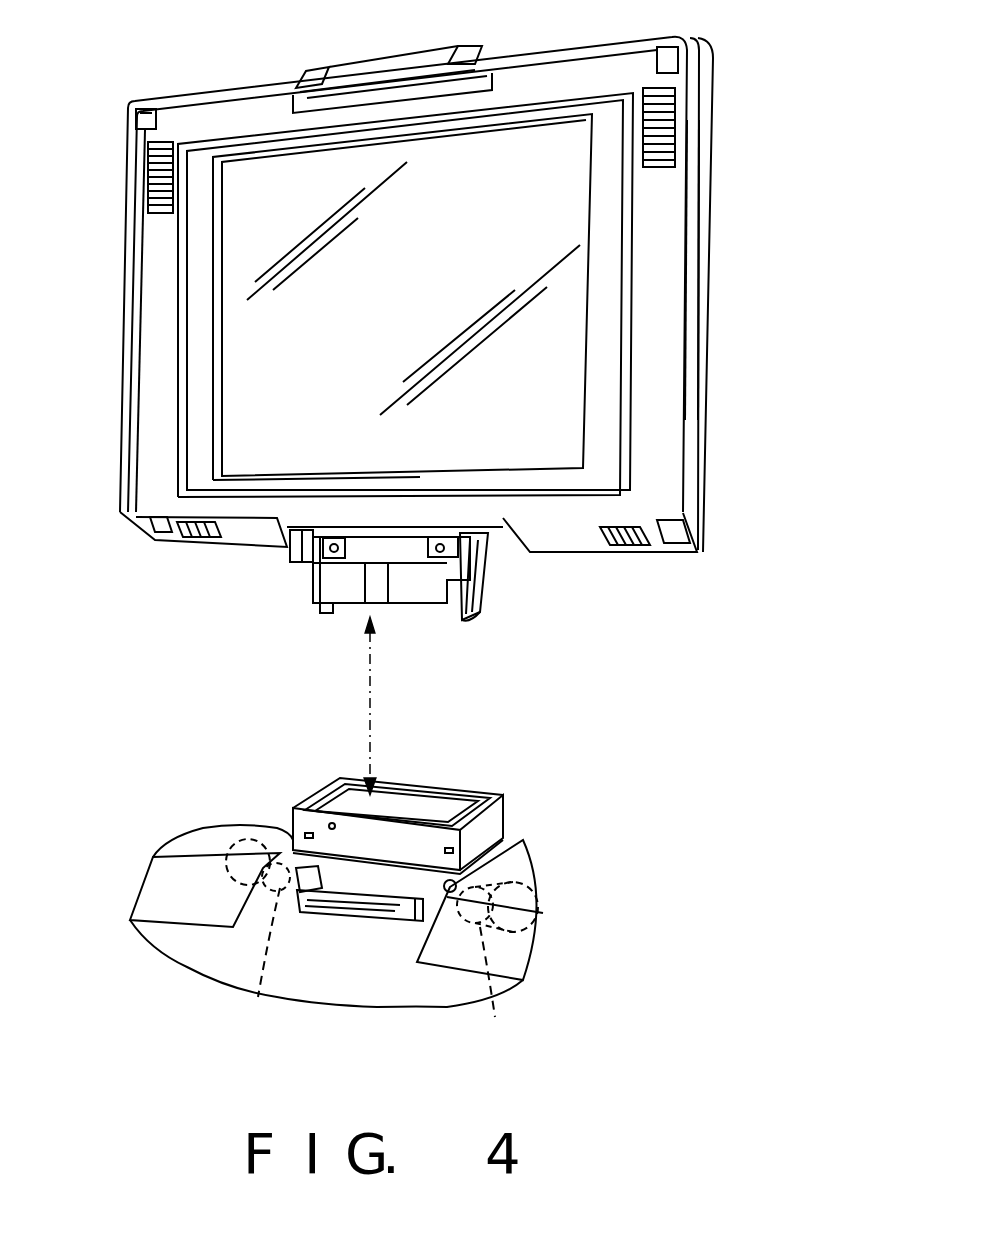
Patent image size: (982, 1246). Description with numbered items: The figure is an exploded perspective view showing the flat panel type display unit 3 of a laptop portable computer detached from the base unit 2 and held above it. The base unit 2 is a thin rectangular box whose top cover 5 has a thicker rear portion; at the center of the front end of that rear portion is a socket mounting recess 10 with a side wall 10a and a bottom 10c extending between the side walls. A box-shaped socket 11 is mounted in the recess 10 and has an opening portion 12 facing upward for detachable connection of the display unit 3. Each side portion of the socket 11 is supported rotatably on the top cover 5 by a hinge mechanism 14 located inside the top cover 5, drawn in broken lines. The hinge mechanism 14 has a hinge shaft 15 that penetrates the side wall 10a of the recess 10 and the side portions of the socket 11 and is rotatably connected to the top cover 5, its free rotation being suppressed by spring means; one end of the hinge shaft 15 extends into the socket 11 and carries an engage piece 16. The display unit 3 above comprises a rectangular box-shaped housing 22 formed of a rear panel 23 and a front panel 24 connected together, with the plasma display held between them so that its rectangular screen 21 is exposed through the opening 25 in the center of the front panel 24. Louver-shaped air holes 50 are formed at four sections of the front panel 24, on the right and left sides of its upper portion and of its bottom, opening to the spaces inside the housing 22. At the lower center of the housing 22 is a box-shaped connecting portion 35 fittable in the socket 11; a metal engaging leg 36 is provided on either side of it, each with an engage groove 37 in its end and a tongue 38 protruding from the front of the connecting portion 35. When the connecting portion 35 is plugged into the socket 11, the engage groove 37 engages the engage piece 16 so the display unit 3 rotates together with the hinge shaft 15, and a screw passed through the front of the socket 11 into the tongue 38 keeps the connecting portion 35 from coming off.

The base unit 2 is at (147, 871).
The display unit 3 is at (122, 357).
The top cover 5 is at (520, 863).
The socket mounting recess 10 is at (415, 930).
The side wall 10a is at (293, 890).
The bottom 10c is at (357, 930).
The socket 11 is at (487, 823).
The opening portion 12 is at (440, 803).
The hinge mechanism 14 is at (252, 854).
The hinge shaft 15 is at (378, 971).
The engage piece 16 is at (320, 806).
The screen 21 is at (570, 183).
The housing 22 is at (791, 270).
The rear panel 23 is at (700, 242).
The front panel 24 is at (688, 295).
The opening 25 is at (220, 260).
The connecting portion 35 is at (372, 592).
The engaging leg 36 is at (327, 613).
The engage groove 37 is at (478, 613).
The tongue 38 is at (440, 538).
The air holes 50 is at (150, 200).